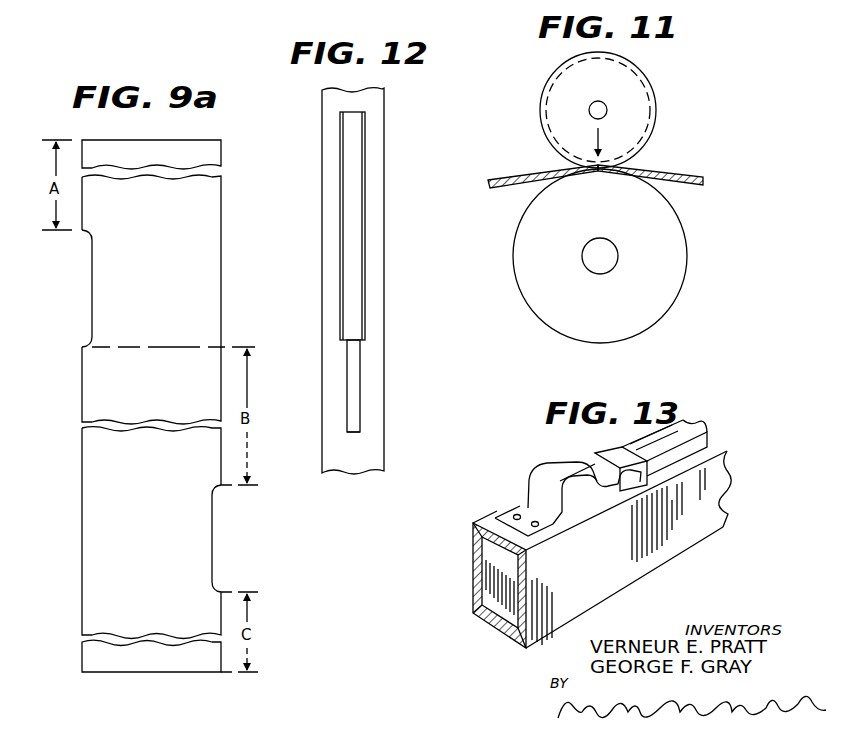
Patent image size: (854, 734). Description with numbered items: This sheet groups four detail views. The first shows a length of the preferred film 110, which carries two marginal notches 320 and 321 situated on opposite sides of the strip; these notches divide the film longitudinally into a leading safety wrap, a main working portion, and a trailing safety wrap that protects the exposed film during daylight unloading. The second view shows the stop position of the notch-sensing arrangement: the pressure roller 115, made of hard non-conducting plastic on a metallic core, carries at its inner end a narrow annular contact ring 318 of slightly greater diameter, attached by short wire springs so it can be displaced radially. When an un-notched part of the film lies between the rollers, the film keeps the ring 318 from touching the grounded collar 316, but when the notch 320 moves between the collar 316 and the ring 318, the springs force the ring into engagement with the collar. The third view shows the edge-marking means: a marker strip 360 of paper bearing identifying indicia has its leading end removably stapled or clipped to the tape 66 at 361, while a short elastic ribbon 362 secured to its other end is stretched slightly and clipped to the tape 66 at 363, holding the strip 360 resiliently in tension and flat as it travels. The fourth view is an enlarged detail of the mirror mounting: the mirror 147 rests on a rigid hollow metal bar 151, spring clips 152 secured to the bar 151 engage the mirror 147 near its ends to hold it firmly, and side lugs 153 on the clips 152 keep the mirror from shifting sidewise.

In FIG. 9a, the film 110 is at (204, 263).
In FIG. 11, the film 110 is at (702, 177).
In FIG. 9a, the marginal notch 320 is at (83, 276).
In FIG. 11, the marginal notch 320 is at (563, 173).
In FIG. 9a, the marginal notch 321 is at (216, 518).
In FIG. 12, the tape 66 is at (385, 263).
In FIG. 12, the marker strip 360 is at (358, 207).
In FIG. 12, the stapled or clipped attachment point 361 is at (360, 124).
In FIG. 12, the elastic ribbon 362 is at (349, 340).
In FIG. 12, the stapled or clipped attachment point 363 is at (352, 430).
In FIG. 11, the contact ring 318 is at (654, 92).
In FIG. 11, the pressure roller 115 is at (654, 118).
In FIG. 11, the collar 316 is at (656, 259).
In FIG. 13, the hollow metal bar 151 is at (694, 534).
In FIG. 13, the spring clip 152 is at (548, 463).
In FIG. 13, the side lug 153 is at (636, 480).
In FIG. 13, the mirror 147 is at (706, 438).